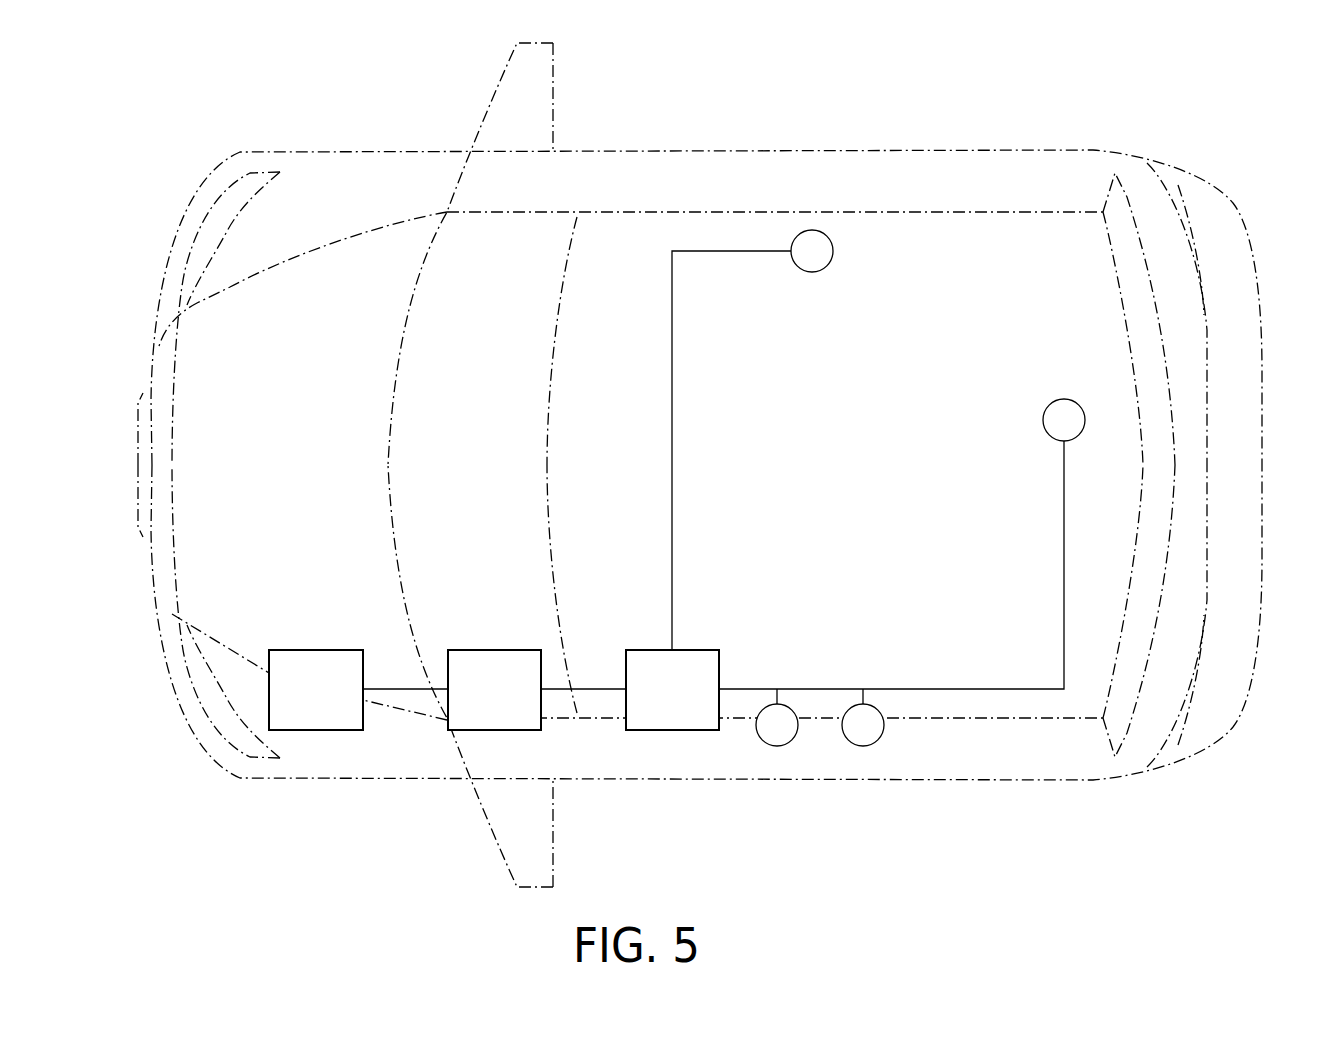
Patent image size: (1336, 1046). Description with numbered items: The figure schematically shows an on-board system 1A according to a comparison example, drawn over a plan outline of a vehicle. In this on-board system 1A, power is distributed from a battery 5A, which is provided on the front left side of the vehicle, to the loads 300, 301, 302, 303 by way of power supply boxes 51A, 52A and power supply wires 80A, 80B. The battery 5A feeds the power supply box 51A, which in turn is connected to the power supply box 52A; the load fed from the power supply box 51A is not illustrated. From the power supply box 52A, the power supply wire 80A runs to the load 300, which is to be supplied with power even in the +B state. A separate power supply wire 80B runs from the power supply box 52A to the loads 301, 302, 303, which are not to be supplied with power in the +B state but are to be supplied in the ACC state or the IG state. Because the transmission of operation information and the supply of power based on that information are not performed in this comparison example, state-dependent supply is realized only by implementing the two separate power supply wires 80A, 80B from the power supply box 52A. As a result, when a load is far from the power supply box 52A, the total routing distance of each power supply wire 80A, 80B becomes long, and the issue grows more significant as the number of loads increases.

The on-board system 1A is at (1165, 122).
The battery 5A is at (312, 649).
The power supply box 51A is at (492, 649).
The power supply box 52A is at (637, 648).
The power supply wire 80A is at (672, 452).
The power supply wire 80B is at (970, 687).
The load 300 is at (834, 251).
The load 301 is at (792, 740).
The load 302 is at (878, 738).
The load 303 is at (1042, 422).